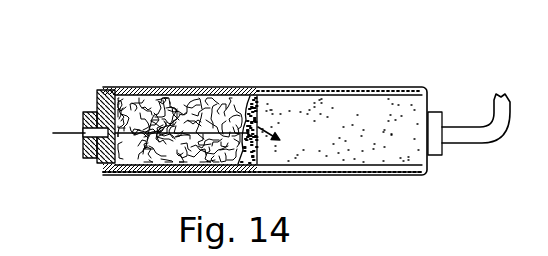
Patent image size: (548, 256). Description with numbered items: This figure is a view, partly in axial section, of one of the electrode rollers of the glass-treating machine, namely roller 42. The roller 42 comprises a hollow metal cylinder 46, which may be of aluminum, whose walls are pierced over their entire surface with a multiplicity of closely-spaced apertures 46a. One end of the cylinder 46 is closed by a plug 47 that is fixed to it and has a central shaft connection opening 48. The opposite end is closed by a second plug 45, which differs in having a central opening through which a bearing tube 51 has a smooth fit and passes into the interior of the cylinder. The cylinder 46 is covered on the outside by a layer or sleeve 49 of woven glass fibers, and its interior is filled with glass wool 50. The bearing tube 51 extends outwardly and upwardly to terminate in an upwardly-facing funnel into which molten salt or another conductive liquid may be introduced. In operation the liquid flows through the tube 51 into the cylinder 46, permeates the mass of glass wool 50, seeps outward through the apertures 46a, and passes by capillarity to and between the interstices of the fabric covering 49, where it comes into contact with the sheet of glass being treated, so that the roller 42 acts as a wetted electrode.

The roller 42 is at (442, 89).
The second plug 45 is at (435, 152).
The hollow metal cylinder 46 is at (130, 88).
The apertures 46a is at (248, 97).
The plug 47 is at (97, 102).
The central shaft connection opening 48 is at (88, 134).
The sleeve of woven glass fibers 49 is at (363, 97).
The glass wool 50 is at (183, 107).
The bearing tube 51 is at (478, 137).